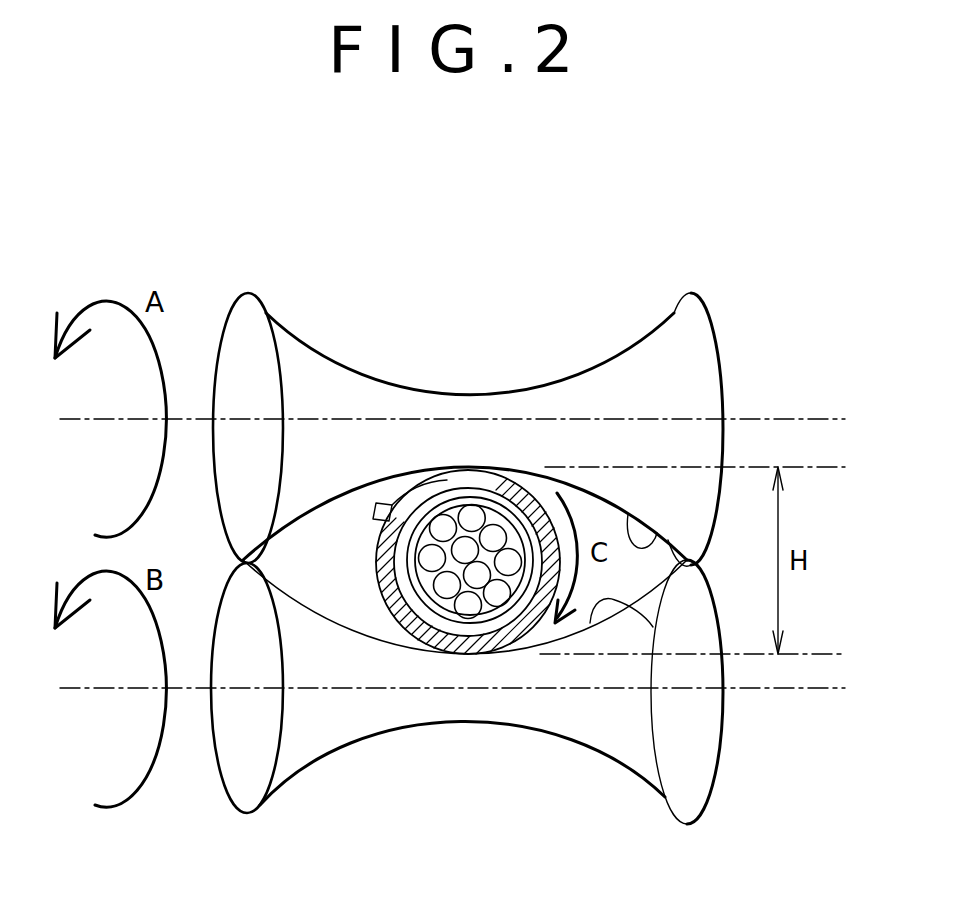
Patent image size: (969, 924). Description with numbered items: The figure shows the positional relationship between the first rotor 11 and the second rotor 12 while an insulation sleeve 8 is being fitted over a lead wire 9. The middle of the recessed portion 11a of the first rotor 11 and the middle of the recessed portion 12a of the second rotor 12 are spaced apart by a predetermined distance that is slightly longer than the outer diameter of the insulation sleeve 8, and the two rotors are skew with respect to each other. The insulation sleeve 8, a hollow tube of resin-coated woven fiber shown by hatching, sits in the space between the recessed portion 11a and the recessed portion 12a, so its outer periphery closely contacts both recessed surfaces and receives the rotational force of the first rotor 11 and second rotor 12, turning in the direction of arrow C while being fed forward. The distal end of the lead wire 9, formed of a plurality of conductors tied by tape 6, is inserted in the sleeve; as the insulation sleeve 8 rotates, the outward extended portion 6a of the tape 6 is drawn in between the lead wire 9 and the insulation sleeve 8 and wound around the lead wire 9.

The tape 6 is at (443, 622).
The extended portion 6a is at (378, 508).
The insulation sleeve 8 is at (508, 487).
The lead wire 9 is at (471, 512).
The first rotor 11 is at (608, 385).
The recessed portion 11a is at (660, 540).
The second rotor 12 is at (590, 733).
The recessed portion 12a is at (653, 628).